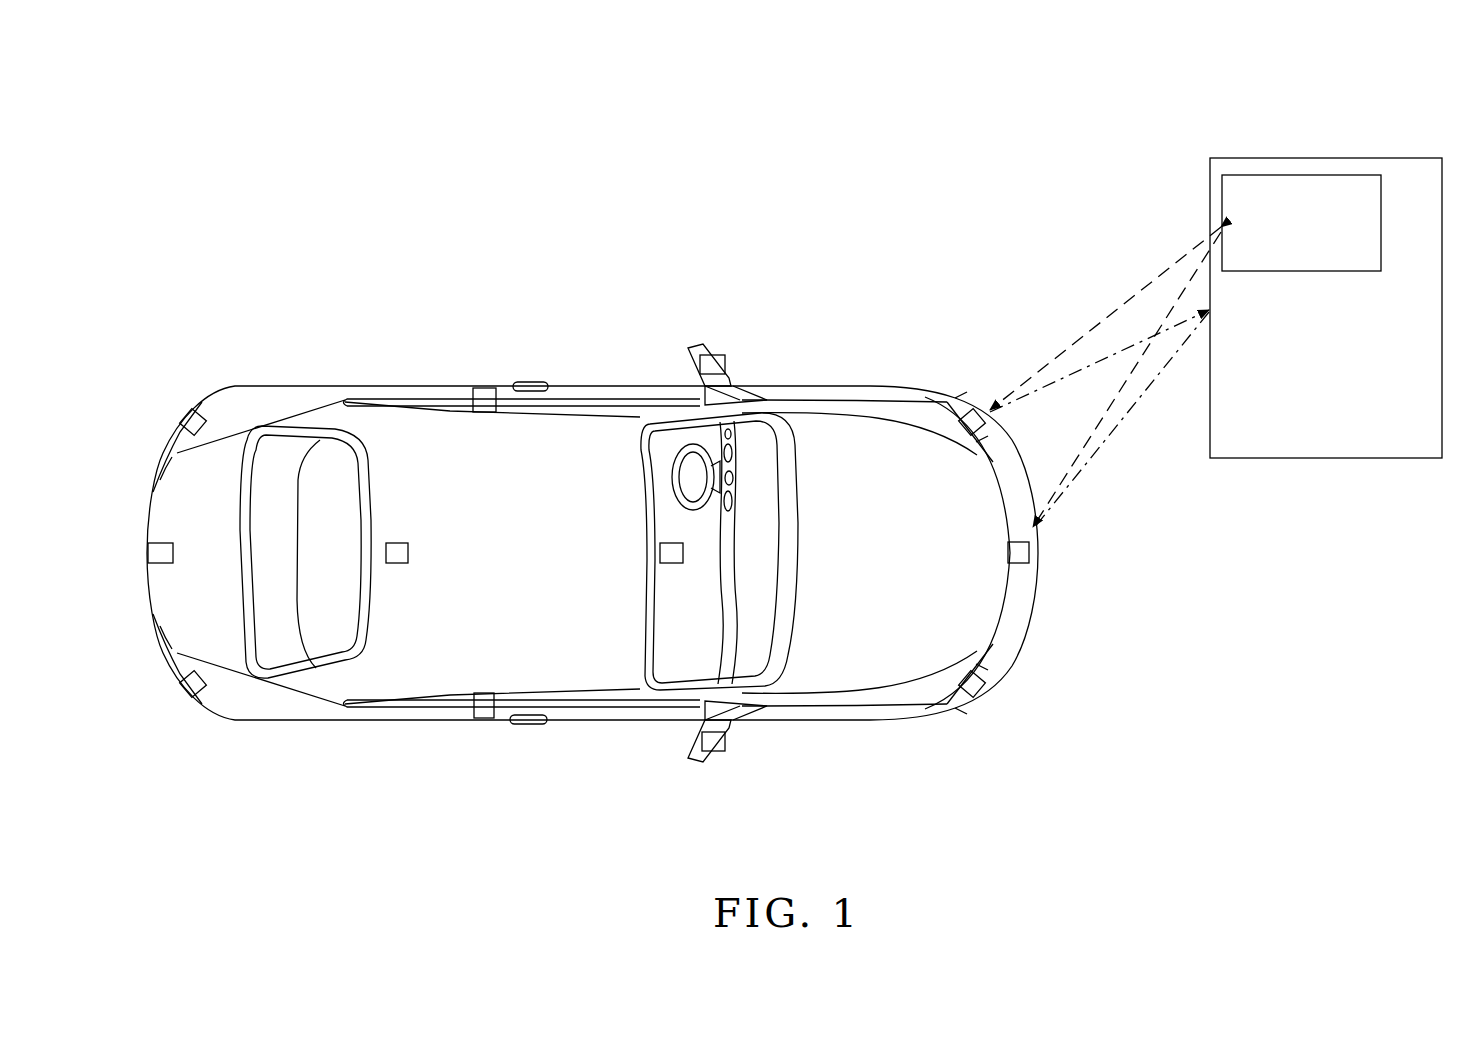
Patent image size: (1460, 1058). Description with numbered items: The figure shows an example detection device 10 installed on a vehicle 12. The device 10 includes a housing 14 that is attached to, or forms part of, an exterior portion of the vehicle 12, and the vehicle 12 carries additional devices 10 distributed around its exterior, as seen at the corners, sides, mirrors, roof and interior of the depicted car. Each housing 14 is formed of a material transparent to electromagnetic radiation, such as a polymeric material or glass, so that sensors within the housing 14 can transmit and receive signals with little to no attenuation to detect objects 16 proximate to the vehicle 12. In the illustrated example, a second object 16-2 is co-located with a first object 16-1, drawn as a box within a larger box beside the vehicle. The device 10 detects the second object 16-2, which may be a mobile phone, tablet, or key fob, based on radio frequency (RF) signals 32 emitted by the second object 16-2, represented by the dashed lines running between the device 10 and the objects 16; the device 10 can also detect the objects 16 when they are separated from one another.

The detection device 10 is at (610, 554).
The vehicle 12 is at (342, 712).
The housing 14 is at (185, 415).
The objects 16 is at (1263, 316).
The first object 16-1 is at (1292, 458).
The second object 16-2 is at (1300, 175).
The radio frequency (RF) signals 32 is at (1180, 292).